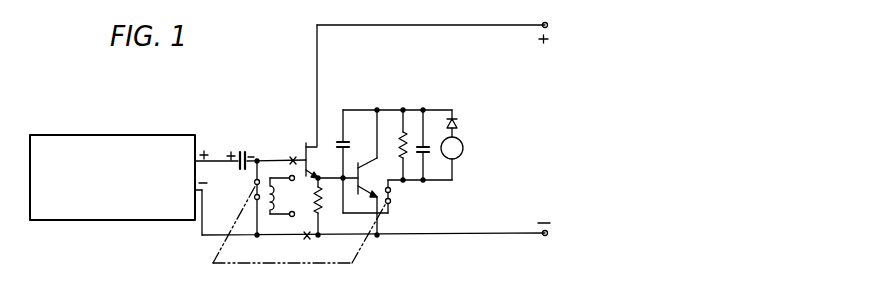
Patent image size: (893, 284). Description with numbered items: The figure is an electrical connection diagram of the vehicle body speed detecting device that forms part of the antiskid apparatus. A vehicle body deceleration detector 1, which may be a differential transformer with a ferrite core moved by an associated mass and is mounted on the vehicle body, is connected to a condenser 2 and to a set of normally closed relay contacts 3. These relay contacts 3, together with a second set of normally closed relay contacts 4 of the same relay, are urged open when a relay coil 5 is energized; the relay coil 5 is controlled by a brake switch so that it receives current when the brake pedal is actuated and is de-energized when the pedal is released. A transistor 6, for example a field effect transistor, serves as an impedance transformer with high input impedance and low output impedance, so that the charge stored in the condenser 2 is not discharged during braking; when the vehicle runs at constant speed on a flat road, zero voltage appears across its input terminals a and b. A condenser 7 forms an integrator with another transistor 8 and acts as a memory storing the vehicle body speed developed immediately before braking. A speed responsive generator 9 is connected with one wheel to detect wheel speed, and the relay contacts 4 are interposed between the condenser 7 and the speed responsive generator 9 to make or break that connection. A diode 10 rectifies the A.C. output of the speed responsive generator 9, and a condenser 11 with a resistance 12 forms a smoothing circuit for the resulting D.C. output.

The vehicle body deceleration detector 1 is at (123, 135).
The condenser 2 is at (242, 151).
The normally closed relay contacts 3 is at (262, 180).
The normally closed relay contacts 4 is at (392, 197).
The relay coil 5 is at (279, 192).
The transistor 6 is at (315, 145).
The condenser 7 is at (350, 144).
The transistor 8 is at (370, 185).
The speed responsive generator 9 is at (464, 143).
The diode 10 is at (457, 126).
The condenser 11 is at (429, 155).
The resistance 12 is at (397, 135).
The input terminal a is at (295, 156).
The input terminal b is at (305, 239).